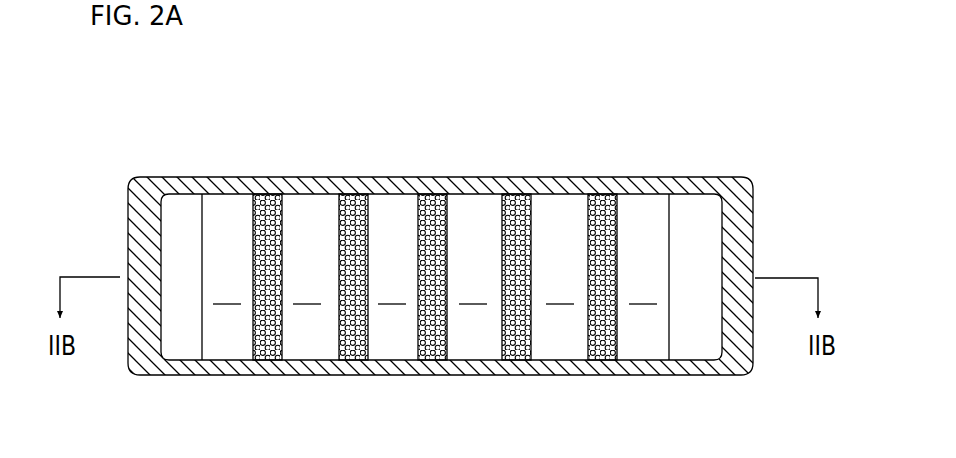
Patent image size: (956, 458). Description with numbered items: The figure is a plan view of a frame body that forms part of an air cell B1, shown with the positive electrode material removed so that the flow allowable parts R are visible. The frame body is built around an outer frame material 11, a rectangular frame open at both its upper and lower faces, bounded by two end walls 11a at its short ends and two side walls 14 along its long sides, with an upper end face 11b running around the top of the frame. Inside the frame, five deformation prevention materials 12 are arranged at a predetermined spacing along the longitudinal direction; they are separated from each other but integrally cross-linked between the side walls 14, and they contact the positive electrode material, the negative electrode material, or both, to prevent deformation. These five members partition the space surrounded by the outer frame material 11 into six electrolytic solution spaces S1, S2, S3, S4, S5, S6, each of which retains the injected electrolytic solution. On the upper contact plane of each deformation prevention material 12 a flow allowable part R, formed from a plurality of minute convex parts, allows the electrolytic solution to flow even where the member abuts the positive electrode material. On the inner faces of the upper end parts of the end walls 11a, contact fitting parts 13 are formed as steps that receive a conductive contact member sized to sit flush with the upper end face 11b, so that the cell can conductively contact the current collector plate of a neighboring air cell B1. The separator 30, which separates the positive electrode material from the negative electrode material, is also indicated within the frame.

The outer frame material 11 is at (127, 176).
The end wall 11a is at (129, 246).
The upper end face 11b is at (140, 212).
The deformation prevention material 12 is at (265, 196).
The contact fitting part 13 is at (180, 220).
The side wall 14 is at (325, 195).
The separator 30 is at (221, 343).
The flow allowable part R is at (500, 198).
The air cell B1 is at (736, 157).
The electrolytic solution space S1 is at (227, 289).
The electrolytic solution space S2 is at (307, 289).
The electrolytic solution space S3 is at (392, 289).
The electrolytic solution space S4 is at (473, 289).
The electrolytic solution space S5 is at (560, 289).
The electrolytic solution space S6 is at (643, 289).